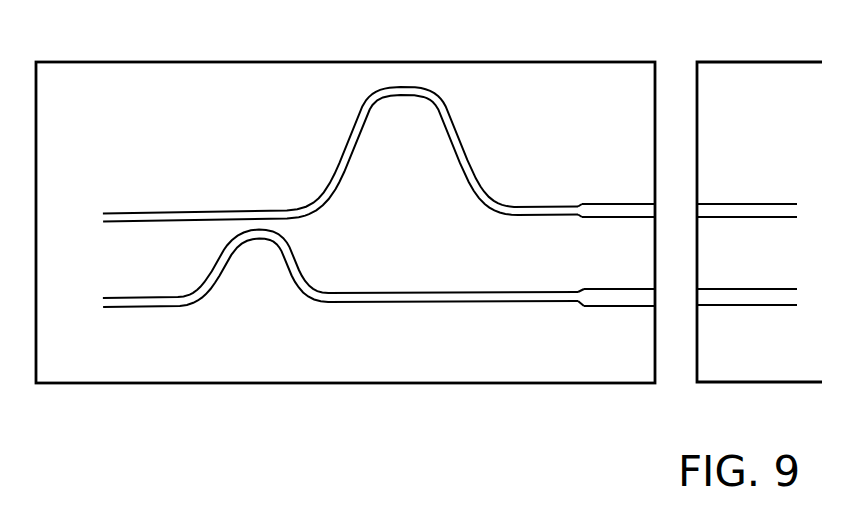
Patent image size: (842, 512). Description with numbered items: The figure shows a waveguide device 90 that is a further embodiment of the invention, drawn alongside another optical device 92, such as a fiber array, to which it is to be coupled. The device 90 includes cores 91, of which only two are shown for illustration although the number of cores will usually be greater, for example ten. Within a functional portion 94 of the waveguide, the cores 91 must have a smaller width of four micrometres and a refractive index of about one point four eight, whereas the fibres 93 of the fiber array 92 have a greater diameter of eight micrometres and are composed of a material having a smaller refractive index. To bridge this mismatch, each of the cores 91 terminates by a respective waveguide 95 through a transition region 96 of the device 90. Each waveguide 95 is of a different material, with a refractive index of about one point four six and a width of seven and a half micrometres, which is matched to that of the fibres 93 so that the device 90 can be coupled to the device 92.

The device 90 is at (345, 226).
The cores 91 is at (165, 211).
The optical device 92 is at (748, 62).
The fibres 93 is at (727, 204).
The functional portion 94 is at (236, 357).
The waveguide 95 is at (630, 204).
The transition region 96 is at (566, 322).